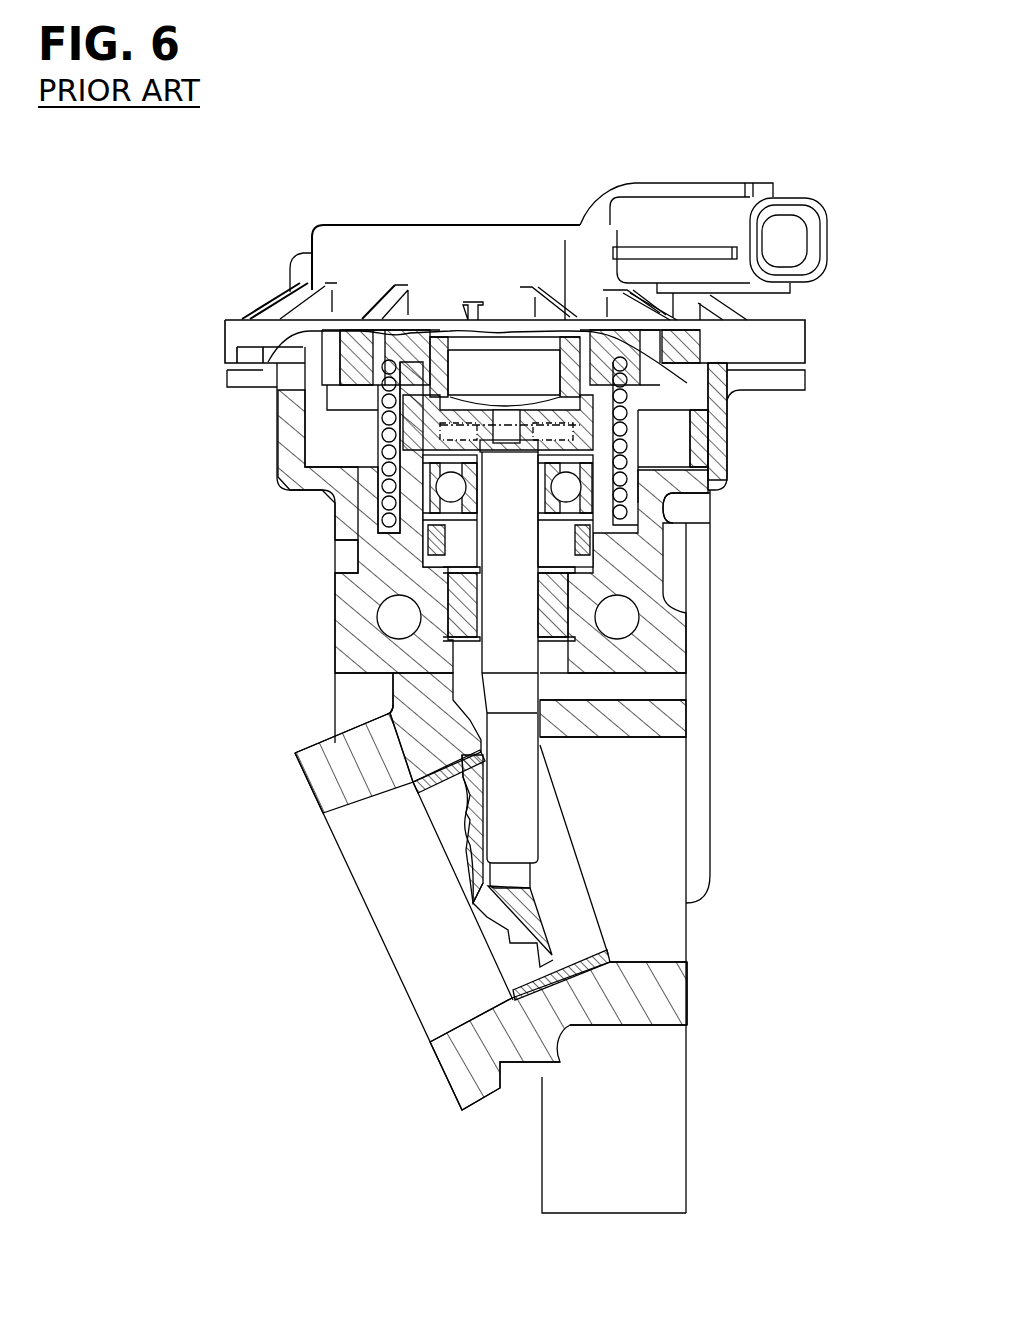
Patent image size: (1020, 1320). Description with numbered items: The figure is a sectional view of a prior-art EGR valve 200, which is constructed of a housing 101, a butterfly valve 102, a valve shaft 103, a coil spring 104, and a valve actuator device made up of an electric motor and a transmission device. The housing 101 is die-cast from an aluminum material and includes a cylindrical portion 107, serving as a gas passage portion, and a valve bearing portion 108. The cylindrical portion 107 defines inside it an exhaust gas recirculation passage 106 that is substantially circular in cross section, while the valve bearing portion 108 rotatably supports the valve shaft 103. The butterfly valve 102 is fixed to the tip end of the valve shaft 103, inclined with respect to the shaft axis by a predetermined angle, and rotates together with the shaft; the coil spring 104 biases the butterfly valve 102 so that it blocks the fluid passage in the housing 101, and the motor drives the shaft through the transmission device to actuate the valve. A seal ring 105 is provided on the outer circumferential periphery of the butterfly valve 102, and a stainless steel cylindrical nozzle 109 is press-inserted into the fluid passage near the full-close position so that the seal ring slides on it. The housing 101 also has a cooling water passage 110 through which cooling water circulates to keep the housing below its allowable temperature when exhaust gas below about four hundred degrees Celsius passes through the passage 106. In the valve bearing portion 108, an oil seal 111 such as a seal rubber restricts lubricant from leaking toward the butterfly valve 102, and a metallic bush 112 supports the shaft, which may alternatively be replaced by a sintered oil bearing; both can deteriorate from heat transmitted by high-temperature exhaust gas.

The EGR valve 200 is at (812, 184).
The housing 101 is at (660, 559).
The butterfly valve 102 is at (548, 935).
The valve shaft 103 is at (523, 763).
The coil spring 104 is at (700, 441).
The seal ring 105 is at (627, 1027).
The exhaust gas recirculation passage 106 is at (650, 847).
The cylindrical portion 107 is at (328, 778).
The valve bearing portion 108 is at (437, 578).
The cylindrical nozzle 109 is at (470, 780).
The cooling water passage 110 is at (382, 624).
The oil seal 111 is at (703, 514).
The metallic bush 112 is at (650, 598).